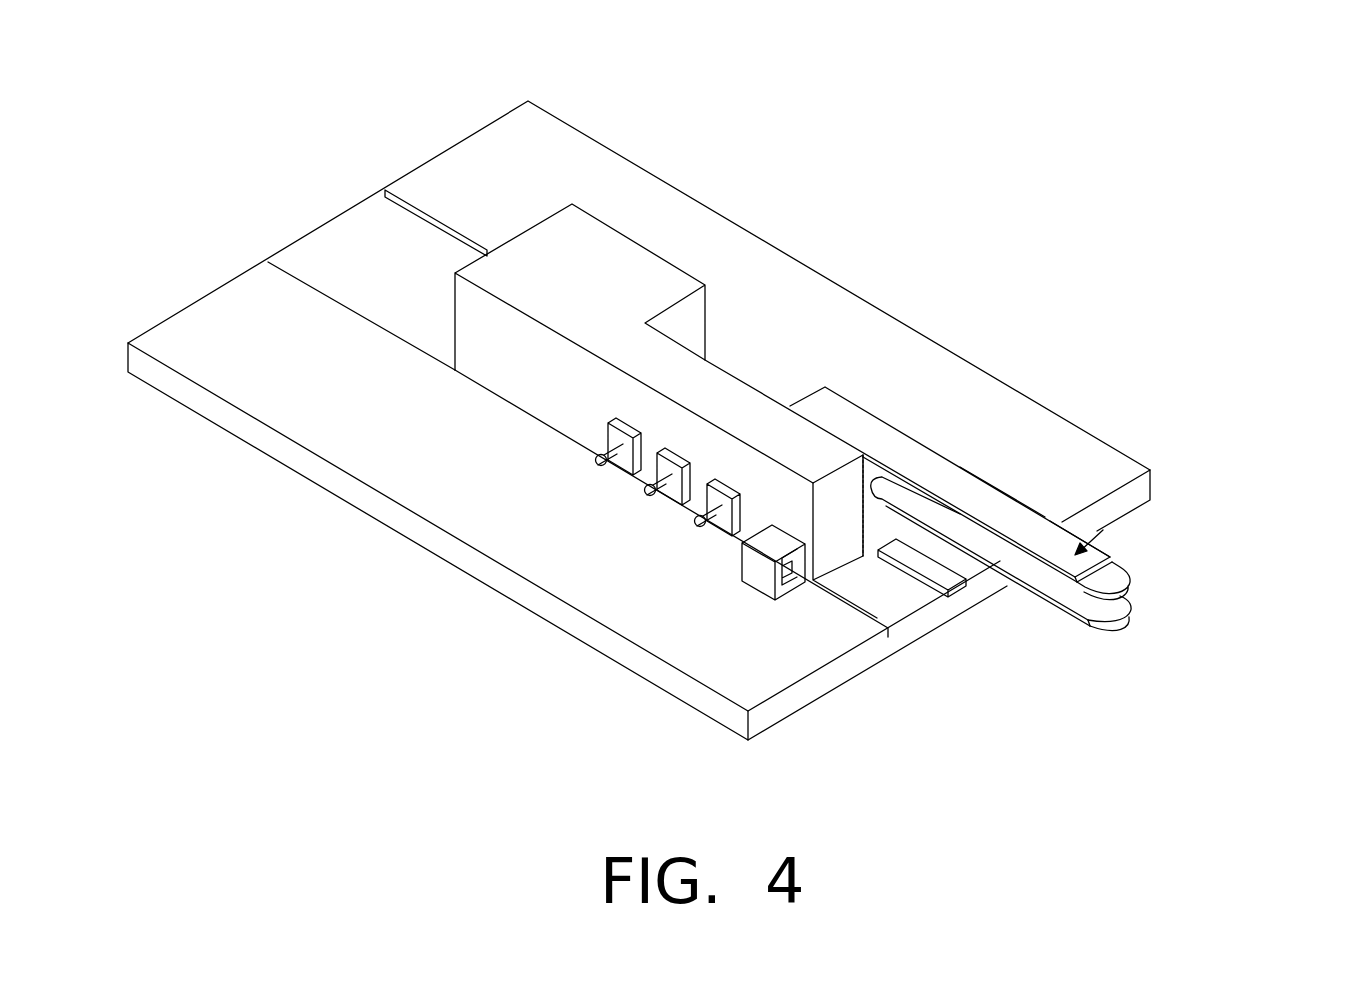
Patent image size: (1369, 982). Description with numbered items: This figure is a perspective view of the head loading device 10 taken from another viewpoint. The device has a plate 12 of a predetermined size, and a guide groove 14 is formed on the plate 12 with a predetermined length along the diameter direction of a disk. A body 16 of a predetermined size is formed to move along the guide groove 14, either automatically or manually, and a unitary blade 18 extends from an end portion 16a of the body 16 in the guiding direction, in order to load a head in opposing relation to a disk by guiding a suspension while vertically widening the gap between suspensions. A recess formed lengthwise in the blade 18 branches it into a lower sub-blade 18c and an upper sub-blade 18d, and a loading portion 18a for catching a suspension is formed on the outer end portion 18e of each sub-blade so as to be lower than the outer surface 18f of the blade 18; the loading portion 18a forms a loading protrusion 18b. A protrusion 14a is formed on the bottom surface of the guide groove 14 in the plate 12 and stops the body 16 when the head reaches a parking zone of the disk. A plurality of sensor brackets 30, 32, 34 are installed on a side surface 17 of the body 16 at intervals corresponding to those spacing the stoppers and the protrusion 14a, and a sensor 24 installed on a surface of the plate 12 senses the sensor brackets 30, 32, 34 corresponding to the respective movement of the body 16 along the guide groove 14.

The head loading device 10 is at (1044, 390).
The plate 12 is at (640, 622).
The guide groove 14 is at (313, 253).
The protrusion 14a is at (884, 541).
The body 16 is at (580, 275).
The end portion of the body 16a is at (832, 470).
The side surface of the body 17 is at (563, 398).
The unitary blade 18 is at (1030, 518).
The loading portion 18a is at (1125, 578).
The loading protrusion 18b is at (1110, 558).
The lower sub-blade 18c is at (1052, 603).
The upper sub-blade 18d is at (1045, 517).
The outer end portion of the sub-blade 18e is at (1131, 620).
The outer surface of the blade 18f is at (1112, 508).
The sensor 24 is at (755, 592).
The sensor bracket 30 is at (702, 520).
The sensor bracket 32 is at (652, 488).
The sensor bracket 34 is at (600, 455).